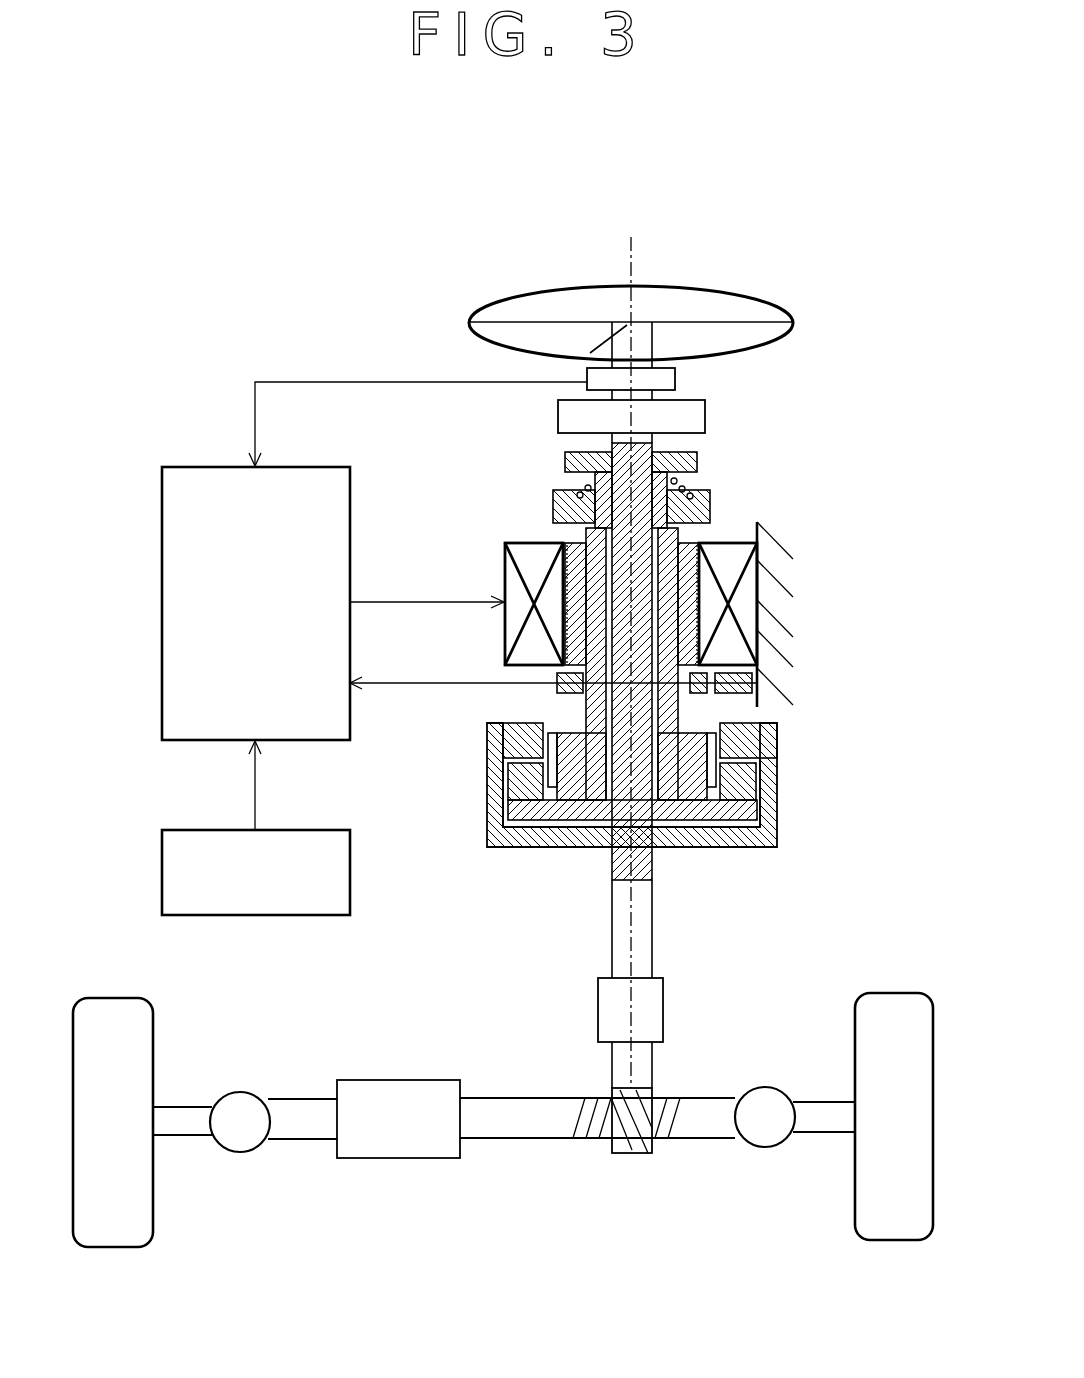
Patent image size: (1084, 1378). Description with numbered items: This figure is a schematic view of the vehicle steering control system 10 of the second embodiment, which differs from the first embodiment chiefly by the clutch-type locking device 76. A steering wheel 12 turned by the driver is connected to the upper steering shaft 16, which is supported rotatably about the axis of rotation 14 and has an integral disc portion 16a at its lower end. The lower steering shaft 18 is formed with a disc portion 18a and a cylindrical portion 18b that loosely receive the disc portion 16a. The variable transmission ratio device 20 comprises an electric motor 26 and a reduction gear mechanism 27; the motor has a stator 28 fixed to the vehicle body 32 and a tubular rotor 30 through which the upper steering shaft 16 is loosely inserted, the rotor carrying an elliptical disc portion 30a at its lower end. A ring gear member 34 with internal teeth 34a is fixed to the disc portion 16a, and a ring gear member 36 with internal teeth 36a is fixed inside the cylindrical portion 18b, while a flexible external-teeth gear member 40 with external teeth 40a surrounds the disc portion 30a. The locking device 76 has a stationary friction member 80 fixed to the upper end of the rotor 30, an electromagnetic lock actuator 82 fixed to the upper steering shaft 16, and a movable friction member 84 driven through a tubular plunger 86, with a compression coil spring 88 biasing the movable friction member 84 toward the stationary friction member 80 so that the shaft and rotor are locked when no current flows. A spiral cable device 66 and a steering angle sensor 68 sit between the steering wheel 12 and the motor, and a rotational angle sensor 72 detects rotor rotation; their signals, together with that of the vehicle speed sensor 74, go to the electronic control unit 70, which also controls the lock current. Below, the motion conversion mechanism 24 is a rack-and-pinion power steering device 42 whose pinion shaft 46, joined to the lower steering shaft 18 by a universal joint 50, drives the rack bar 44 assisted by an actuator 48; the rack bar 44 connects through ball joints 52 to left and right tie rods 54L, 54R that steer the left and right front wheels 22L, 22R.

The steering control system 10 is at (362, 333).
The steering wheel 12 is at (752, 296).
The axis of rotation 14 is at (627, 262).
The upper steering shaft 16 is at (612, 445).
The disc portion 16a is at (565, 820).
The lower steering shaft 18 is at (652, 957).
The disc portion 18a is at (733, 845).
The cylindrical portion 18b is at (767, 833).
The variable transmission ratio device 20 is at (782, 514).
The left front wheel 22L is at (113, 998).
The right front wheel 22R is at (893, 993).
The motion conversion mechanism 24 is at (512, 1008).
The electric motor 26 is at (500, 534).
The reduction gear mechanism 27 is at (485, 745).
The stator 28 is at (505, 566).
The rotor 30 is at (700, 590).
The disc portion 30a is at (682, 772).
The vehicle body 32 is at (785, 541).
The ring gear member 34 is at (738, 772).
The internal teeth 34a is at (760, 797).
The ring gear member 36 is at (747, 728).
The internal teeth 36a is at (718, 742).
The external-teeth gear member 40 is at (552, 738).
The external teeth 40a is at (520, 772).
The power steering device 42 is at (397, 1078).
The rack bar 44 is at (497, 1140).
The pinion shaft 46 is at (635, 1153).
The actuator 48 is at (390, 1158).
The universal joint 50 is at (598, 995).
The ball joints 52 is at (240, 1098).
The left tie rod 54L is at (183, 1135).
The right tie rod 54R is at (820, 1132).
The spiral cable device 66 is at (558, 413).
The steering angle sensor 68 is at (675, 380).
The electronic control unit 70 is at (238, 666).
The rotational angle sensor 72 is at (757, 679).
The vehicle speed sensor 74 is at (253, 916).
The locking device 76 is at (722, 446).
The stationary friction member 80 is at (553, 506).
The lock actuator 82 is at (697, 462).
The movable friction member 84 is at (710, 498).
The plunger 86 is at (690, 526).
The compression coil spring 88 is at (575, 488).